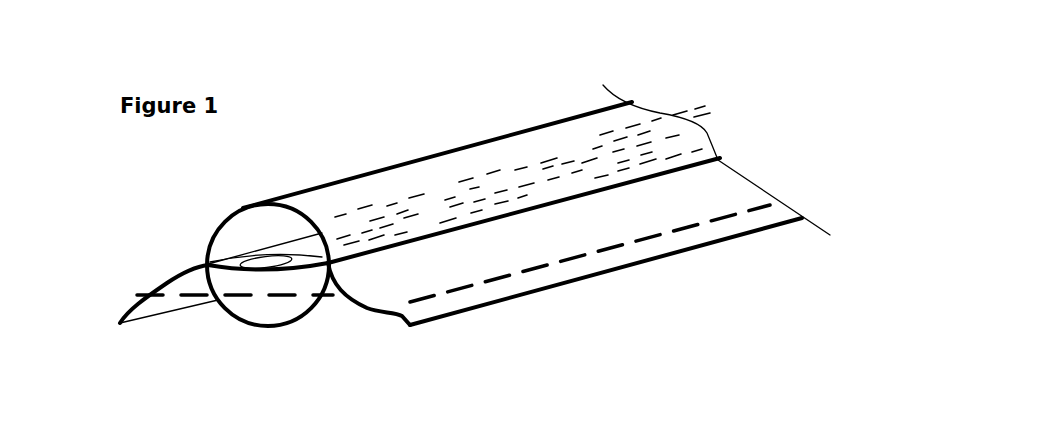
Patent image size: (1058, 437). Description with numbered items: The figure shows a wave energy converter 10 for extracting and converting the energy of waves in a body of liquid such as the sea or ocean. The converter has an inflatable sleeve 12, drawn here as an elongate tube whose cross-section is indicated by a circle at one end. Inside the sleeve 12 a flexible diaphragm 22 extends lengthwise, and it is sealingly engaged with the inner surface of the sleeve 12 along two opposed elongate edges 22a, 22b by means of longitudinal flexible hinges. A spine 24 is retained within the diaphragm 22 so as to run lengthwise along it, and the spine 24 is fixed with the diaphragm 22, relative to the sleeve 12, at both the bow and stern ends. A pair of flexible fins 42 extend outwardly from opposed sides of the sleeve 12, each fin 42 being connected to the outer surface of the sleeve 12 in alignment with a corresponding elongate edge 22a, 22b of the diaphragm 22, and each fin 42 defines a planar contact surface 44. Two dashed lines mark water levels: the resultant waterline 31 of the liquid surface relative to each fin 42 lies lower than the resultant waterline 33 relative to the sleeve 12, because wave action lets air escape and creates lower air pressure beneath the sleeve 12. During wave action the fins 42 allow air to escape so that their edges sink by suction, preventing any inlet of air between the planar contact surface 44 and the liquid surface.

The wave energy converter 10 is at (410, 149).
The inflatable sleeve 12 is at (510, 134).
The flexible diaphragm 22 is at (228, 262).
The elongate edge 22a is at (203, 262).
The elongate edge 22b is at (330, 272).
The spine 24 is at (263, 262).
The resultant waterline 31 is at (607, 252).
The resultant waterline 33 is at (247, 297).
The flexible fin 42 is at (706, 198).
The planar contact surface 44 is at (150, 314).